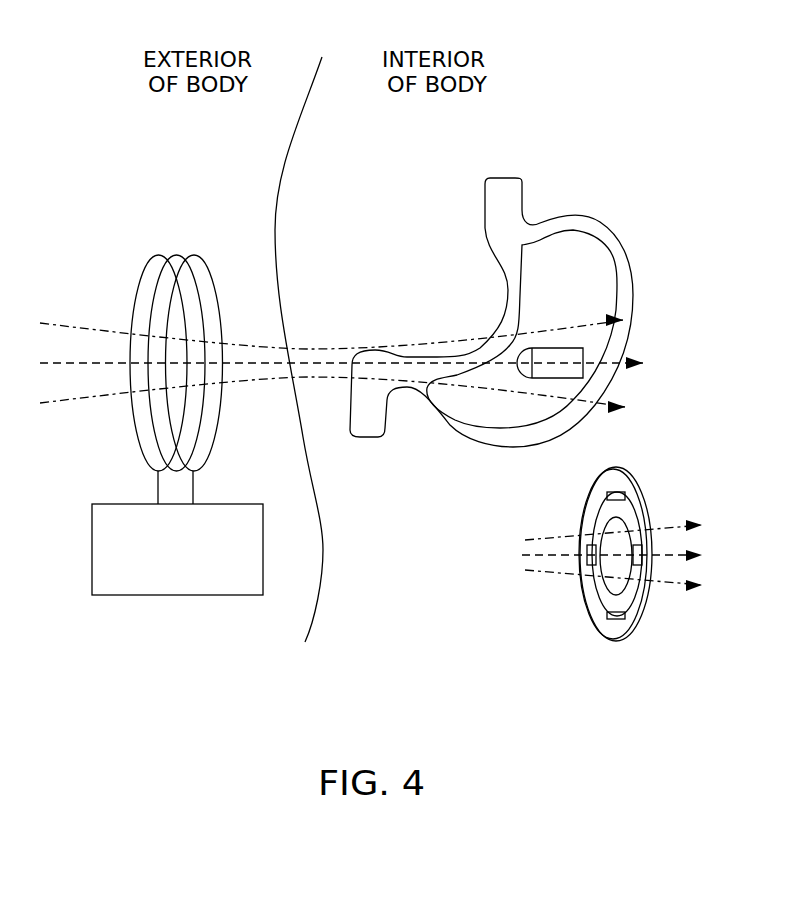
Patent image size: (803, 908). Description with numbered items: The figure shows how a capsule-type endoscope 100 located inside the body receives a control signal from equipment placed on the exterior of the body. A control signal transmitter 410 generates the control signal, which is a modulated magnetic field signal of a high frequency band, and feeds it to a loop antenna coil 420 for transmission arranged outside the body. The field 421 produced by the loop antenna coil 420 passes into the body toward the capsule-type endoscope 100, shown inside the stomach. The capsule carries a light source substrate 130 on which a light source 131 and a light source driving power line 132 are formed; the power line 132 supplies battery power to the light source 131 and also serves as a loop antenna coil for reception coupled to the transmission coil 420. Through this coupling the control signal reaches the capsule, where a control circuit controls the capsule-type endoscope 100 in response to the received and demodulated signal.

The capsule-type endoscope 100 is at (583, 352).
The light source substrate 130 is at (626, 482).
The light source 131 is at (610, 492).
The light source driving power line 132 is at (632, 600).
The control signal transmitter 410 is at (188, 595).
The loop antenna coil for transmission 420 is at (175, 255).
The magnetic field / control signal lines 421 is at (308, 348).